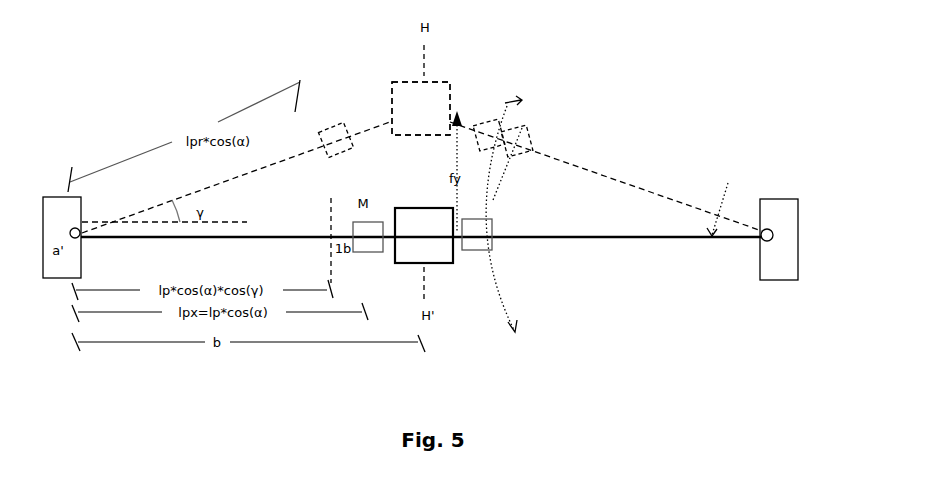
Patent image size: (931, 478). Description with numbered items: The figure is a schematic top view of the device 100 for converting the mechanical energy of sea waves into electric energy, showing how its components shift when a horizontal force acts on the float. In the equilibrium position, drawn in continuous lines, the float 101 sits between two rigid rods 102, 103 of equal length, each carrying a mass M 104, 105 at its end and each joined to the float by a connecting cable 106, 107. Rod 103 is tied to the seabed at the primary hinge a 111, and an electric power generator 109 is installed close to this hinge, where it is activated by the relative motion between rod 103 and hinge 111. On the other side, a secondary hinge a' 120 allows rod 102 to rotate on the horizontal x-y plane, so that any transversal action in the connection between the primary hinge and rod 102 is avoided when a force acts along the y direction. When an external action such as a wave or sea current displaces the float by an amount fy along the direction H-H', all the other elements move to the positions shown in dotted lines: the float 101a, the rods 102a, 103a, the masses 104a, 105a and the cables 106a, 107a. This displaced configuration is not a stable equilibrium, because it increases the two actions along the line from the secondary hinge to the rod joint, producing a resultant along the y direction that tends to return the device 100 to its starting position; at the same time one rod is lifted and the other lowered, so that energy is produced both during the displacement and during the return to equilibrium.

The device 100 is at (165, 80).
The secondary hinge a' 120 is at (78, 232).
The rigid rod 102 is at (200, 238).
The rigid rod in displaced position 102a is at (147, 202).
The mass M 104 is at (353, 233).
The mass M in displaced position 104a is at (318, 138).
The connecting cable 106 is at (389, 238).
The connecting cable in displaced position 106a is at (378, 125).
The float 101 is at (443, 258).
The float in displaced position 101a is at (445, 88).
The connecting cable 107 is at (455, 238).
The connecting cable in displaced position 107a is at (467, 118).
The mass M 105 is at (492, 230).
The mass M in displaced position 105a is at (523, 130).
The rigid rod 103 is at (640, 237).
The rigid rod in displaced position 103a is at (695, 207).
The hinge a 111 is at (768, 230).
The electric power generator 109 is at (795, 255).